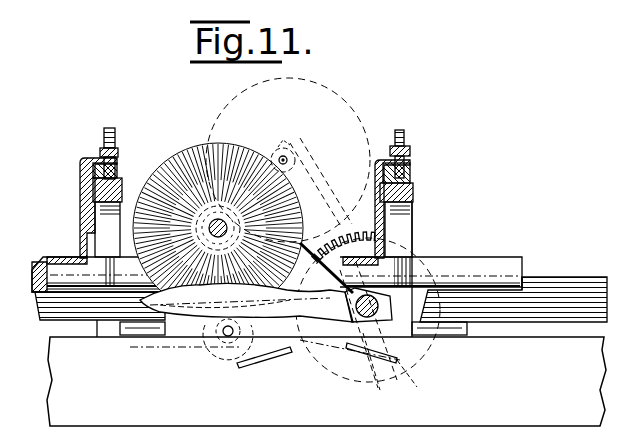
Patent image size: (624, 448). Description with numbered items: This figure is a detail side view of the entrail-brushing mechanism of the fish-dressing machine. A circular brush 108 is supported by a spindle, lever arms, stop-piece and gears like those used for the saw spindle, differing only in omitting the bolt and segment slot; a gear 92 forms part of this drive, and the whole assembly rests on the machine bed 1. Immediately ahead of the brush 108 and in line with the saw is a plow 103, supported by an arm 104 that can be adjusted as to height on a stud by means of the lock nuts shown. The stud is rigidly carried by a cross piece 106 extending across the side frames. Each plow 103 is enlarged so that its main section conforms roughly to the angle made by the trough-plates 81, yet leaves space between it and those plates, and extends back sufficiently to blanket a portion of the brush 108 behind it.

The bed 1 is at (326, 381).
The trough-plates 81 is at (555, 280).
The gear segment 92 is at (338, 222).
The plow 103 is at (53, 274).
The arm 104 is at (100, 158).
The cross piece 106 is at (150, 170).
The circular brush 108 is at (196, 151).